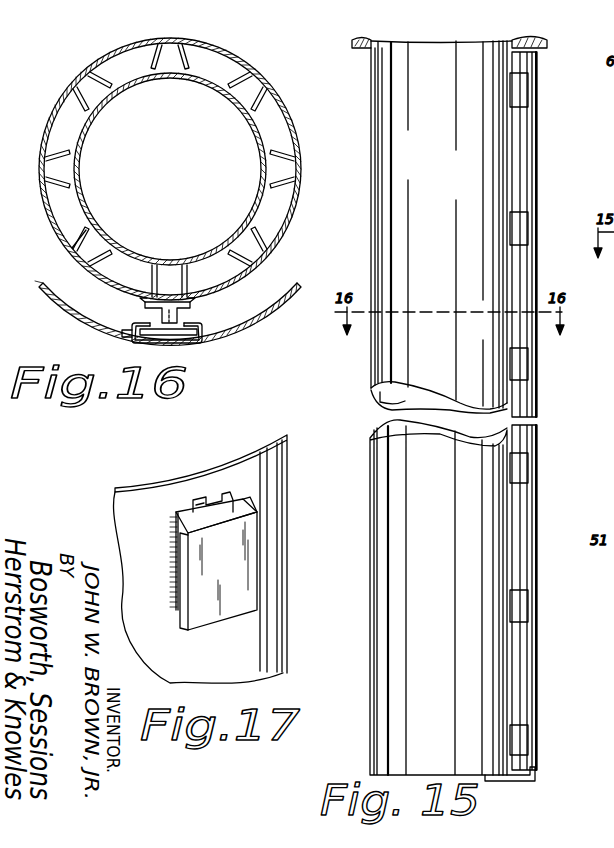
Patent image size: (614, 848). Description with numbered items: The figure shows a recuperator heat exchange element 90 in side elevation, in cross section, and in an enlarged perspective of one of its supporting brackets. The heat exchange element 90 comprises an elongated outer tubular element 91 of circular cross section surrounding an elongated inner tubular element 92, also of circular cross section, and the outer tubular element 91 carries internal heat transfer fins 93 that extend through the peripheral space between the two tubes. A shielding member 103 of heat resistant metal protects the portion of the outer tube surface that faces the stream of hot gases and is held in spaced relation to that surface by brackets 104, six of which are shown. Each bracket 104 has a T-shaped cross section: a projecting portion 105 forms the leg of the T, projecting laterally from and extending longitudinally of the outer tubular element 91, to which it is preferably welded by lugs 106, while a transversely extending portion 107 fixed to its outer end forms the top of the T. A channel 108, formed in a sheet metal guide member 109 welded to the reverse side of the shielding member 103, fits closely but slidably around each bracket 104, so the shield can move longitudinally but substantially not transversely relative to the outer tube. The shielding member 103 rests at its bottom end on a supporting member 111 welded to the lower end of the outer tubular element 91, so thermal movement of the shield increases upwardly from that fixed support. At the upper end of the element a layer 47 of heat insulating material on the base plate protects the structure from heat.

In FIG. 15, the layer of heat insulating material 47 is at (360, 50).
In FIG. 16, the heat exchange element 90 is at (275, 73).
In FIG. 17, the heat exchange element 90 is at (291, 654).
In FIG. 15, the heat exchange element 90 is at (365, 378).
In FIG. 16, the outer tubular element 91 is at (80, 90).
In FIG. 17, the outer tubular element 91 is at (126, 520).
In FIG. 15, the outer tubular element 91 is at (390, 190).
In FIG. 16, the inner tubular element 92 is at (153, 80).
In FIG. 15, the inner tubular element 92 is at (402, 401).
In FIG. 16, the internal heat transfer fins 93 is at (84, 226).
In FIG. 16, the shielding member 103 is at (263, 330).
In FIG. 15, the shielding member 103 is at (540, 158).
In FIG. 16, the brackets 104 is at (146, 322).
In FIG. 17, the brackets 104 is at (258, 562).
In FIG. 15, the brackets 104 is at (514, 92).
In FIG. 16, the projecting portion 105 is at (180, 318).
In FIG. 17, the projecting portion 105 is at (193, 514).
In FIG. 16, the lugs 106 is at (192, 304).
In FIG. 17, the lugs 106 is at (221, 496).
In FIG. 16, the transversely extending portion 107 is at (198, 337).
In FIG. 17, the transversely extending portion 107 is at (258, 538).
In FIG. 16, the channel 108 is at (134, 342).
In FIG. 16, the guide member 109 is at (125, 332).
In FIG. 15, the supporting member 111 is at (513, 784).